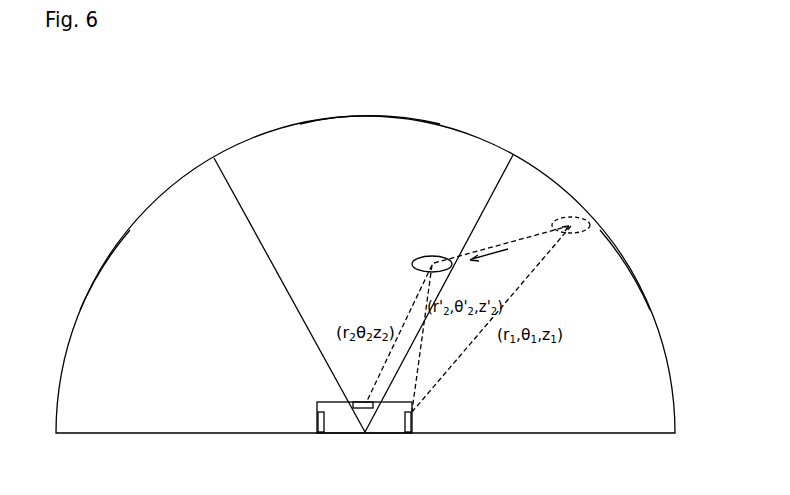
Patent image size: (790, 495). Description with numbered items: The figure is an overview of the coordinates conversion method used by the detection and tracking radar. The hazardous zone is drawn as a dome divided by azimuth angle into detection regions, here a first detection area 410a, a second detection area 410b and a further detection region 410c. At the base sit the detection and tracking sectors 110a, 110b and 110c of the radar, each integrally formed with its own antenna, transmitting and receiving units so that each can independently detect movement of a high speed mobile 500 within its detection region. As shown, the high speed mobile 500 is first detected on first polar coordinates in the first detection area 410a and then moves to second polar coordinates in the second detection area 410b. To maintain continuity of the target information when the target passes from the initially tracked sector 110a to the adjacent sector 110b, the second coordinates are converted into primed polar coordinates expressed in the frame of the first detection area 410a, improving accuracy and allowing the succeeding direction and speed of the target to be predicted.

The first detection area 410a is at (621, 262).
The second detection area 410b is at (372, 122).
The detection region 410c is at (110, 268).
The high speed mobile 500 is at (427, 258).
The detection and tracking sector 110a is at (408, 434).
The detection and tracking sector 110b is at (369, 434).
The detection and tracking sector 110c is at (321, 434).